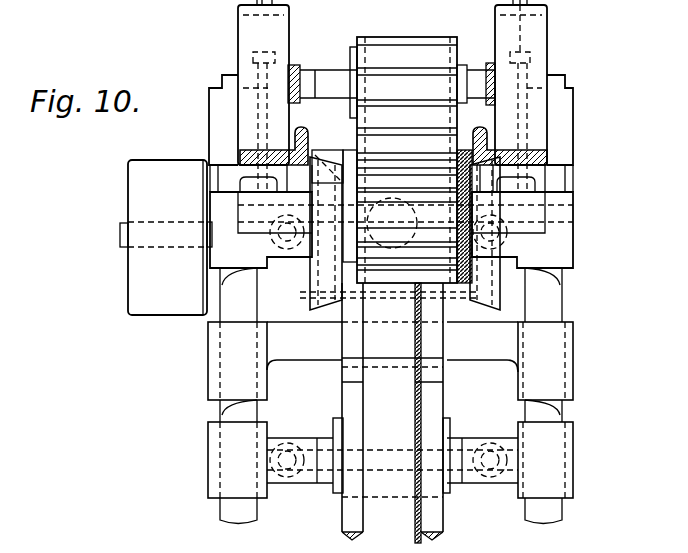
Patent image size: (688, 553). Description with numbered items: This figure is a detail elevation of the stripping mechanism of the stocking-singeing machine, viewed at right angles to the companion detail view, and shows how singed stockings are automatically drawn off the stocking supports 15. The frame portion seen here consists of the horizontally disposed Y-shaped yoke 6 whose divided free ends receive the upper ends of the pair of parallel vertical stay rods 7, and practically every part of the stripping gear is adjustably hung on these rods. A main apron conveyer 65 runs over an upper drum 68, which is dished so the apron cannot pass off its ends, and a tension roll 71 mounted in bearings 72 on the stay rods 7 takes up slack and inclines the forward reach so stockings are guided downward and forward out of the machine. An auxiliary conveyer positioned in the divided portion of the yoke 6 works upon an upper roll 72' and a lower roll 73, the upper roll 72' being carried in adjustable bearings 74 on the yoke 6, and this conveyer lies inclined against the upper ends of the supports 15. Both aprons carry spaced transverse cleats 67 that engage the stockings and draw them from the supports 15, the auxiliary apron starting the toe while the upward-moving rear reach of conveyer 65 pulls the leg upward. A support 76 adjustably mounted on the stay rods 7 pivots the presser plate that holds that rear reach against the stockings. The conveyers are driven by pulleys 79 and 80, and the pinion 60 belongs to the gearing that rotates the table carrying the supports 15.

The yoke 6 is at (305, 130).
The stay rods 7 is at (248, 415).
The stocking support 15 is at (392, 407).
The pinion 60 is at (420, 52).
The main apron conveyer 65 is at (347, 515).
The cleats 67 is at (353, 373).
The upper drum 68 is at (463, 290).
The tension roll 71 is at (450, 425).
The bearings 72 is at (393, 423).
The upper roll 72' is at (337, 78).
The lower roll 73 is at (345, 268).
The adjustable bearings 74 is at (245, 43).
The support 76 is at (392, 347).
The pulley 79 is at (135, 205).
The pulley 80 is at (325, 160).